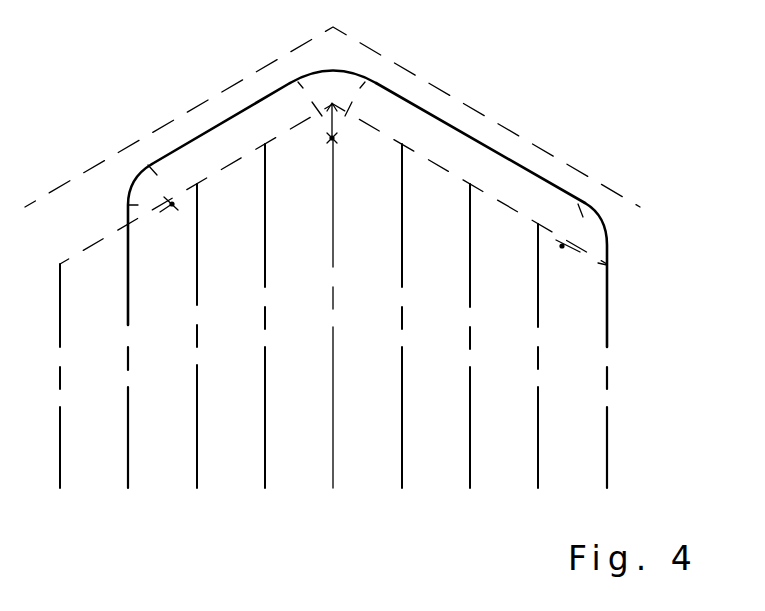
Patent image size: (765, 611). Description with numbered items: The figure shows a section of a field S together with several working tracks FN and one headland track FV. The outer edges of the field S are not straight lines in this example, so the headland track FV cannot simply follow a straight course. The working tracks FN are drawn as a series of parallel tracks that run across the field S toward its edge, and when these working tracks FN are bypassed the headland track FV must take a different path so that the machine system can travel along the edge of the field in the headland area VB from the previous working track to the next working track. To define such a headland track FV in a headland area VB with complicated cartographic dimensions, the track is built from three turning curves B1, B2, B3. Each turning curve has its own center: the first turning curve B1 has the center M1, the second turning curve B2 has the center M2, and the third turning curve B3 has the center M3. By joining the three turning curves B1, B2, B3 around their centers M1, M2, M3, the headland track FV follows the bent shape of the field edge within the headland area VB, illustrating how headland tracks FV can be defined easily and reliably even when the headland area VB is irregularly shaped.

The headland track FV is at (490, 64).
The first turning curve B1 is at (137, 175).
The second turning curve B2 is at (318, 71).
The third turning curve B3 is at (608, 204).
The headland area VB is at (393, 80).
The field S is at (308, 247).
The working tracks FN is at (630, 338).
The center of first turning curve M1 is at (175, 207).
The center of second turning curve M2 is at (335, 141).
The center of third turning curve M3 is at (559, 247).